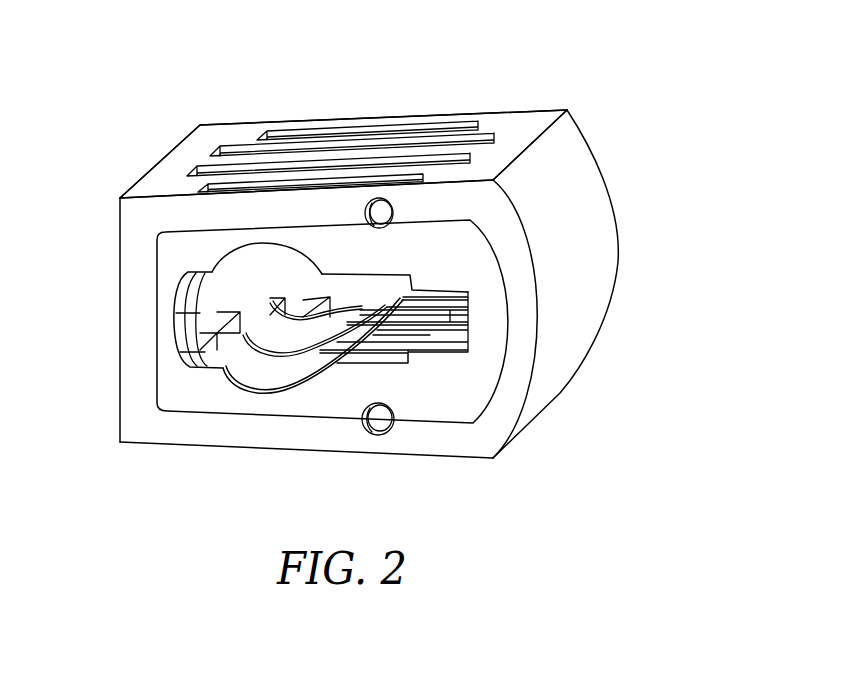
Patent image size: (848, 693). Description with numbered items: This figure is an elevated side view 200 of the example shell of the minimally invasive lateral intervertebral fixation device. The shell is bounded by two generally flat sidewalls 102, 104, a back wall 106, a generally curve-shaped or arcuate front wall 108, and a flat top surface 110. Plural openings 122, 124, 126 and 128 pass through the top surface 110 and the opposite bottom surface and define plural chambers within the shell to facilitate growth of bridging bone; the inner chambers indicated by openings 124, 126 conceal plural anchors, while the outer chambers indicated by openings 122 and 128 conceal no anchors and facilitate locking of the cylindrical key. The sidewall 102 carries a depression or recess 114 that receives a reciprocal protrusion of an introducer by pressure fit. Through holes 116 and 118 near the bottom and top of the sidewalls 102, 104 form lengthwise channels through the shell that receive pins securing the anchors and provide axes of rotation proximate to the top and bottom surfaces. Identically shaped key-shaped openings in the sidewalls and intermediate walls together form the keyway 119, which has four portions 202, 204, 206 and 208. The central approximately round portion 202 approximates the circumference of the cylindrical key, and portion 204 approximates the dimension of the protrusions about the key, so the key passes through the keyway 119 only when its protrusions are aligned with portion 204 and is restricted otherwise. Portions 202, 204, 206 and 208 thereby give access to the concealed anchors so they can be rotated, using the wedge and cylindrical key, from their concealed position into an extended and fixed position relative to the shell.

The sidewall 102 is at (467, 440).
The sidewall 104 is at (352, 116).
The back wall 106 is at (120, 317).
The front wall 108 is at (578, 337).
The top surface 110 is at (170, 168).
The recess 114 is at (435, 403).
The through hole 116 is at (380, 436).
The through hole 118 is at (392, 221).
The keyway 119 is at (222, 387).
The opening 122 is at (424, 178).
The opening 124 is at (470, 153).
The opening 126 is at (494, 135).
The opening 128 is at (460, 114).
The elevated side view 200 is at (197, 113).
The central round portion 202 is at (257, 393).
The portion 204 is at (178, 313).
The portion 206 is at (343, 378).
The portion 208 is at (447, 353).